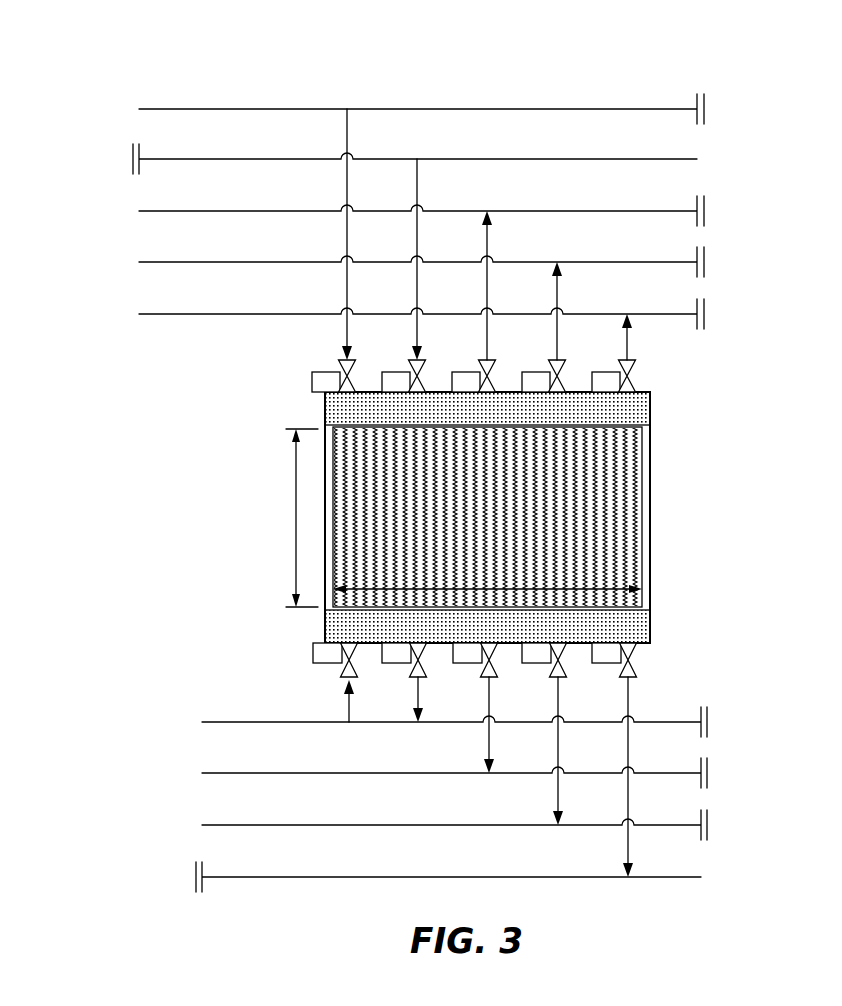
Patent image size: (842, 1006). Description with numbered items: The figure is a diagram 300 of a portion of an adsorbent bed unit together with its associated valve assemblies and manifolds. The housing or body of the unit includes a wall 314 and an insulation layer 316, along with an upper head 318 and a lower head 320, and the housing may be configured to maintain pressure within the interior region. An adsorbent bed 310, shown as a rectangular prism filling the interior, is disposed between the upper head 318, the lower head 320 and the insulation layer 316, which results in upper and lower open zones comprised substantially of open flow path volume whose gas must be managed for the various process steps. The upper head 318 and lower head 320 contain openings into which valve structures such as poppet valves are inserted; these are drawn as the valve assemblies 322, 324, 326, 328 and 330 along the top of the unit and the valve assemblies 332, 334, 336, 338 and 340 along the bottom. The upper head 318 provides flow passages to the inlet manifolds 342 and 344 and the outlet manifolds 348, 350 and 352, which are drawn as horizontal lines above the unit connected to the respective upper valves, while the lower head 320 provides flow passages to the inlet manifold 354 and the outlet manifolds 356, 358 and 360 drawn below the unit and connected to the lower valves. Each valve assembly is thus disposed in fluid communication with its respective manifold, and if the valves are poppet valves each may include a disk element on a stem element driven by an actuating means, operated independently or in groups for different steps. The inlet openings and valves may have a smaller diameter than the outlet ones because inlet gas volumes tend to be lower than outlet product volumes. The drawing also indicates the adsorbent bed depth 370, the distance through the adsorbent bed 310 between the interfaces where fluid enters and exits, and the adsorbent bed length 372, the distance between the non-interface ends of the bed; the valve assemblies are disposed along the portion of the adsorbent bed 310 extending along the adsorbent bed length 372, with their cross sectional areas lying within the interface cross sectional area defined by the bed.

The diagram 300 is at (130, 42).
The adsorbent bed 310 is at (605, 545).
The wall 314 is at (652, 445).
The insulation layer 316 is at (642, 498).
The upper head 318 is at (652, 404).
The lower head 320 is at (652, 620).
The valve assembly 322 is at (382, 357).
The valve assembly 324 is at (451, 357).
The valve assembly 326 is at (520, 357).
The valve assembly 328 is at (589, 357).
The valve assembly 330 is at (660, 357).
The valve assembly 332 is at (357, 666).
The valve assembly 334 is at (426, 666).
The valve assembly 336 is at (497, 666).
The valve assembly 338 is at (566, 666).
The valve assembly 340 is at (636, 666).
The inlet manifold 342 is at (246, 108).
The inlet manifold 344 is at (246, 158).
The outlet manifold 348 is at (246, 210).
The outlet manifold 350 is at (246, 261).
The outlet manifold 352 is at (246, 313).
The inlet manifold 354 is at (290, 722).
The outlet manifold 356 is at (290, 773).
The outlet manifold 358 is at (290, 825).
The outlet manifold 360 is at (290, 877).
The adsorbent bed depth 370 is at (295, 508).
The adsorbent bed length 372 is at (605, 583).